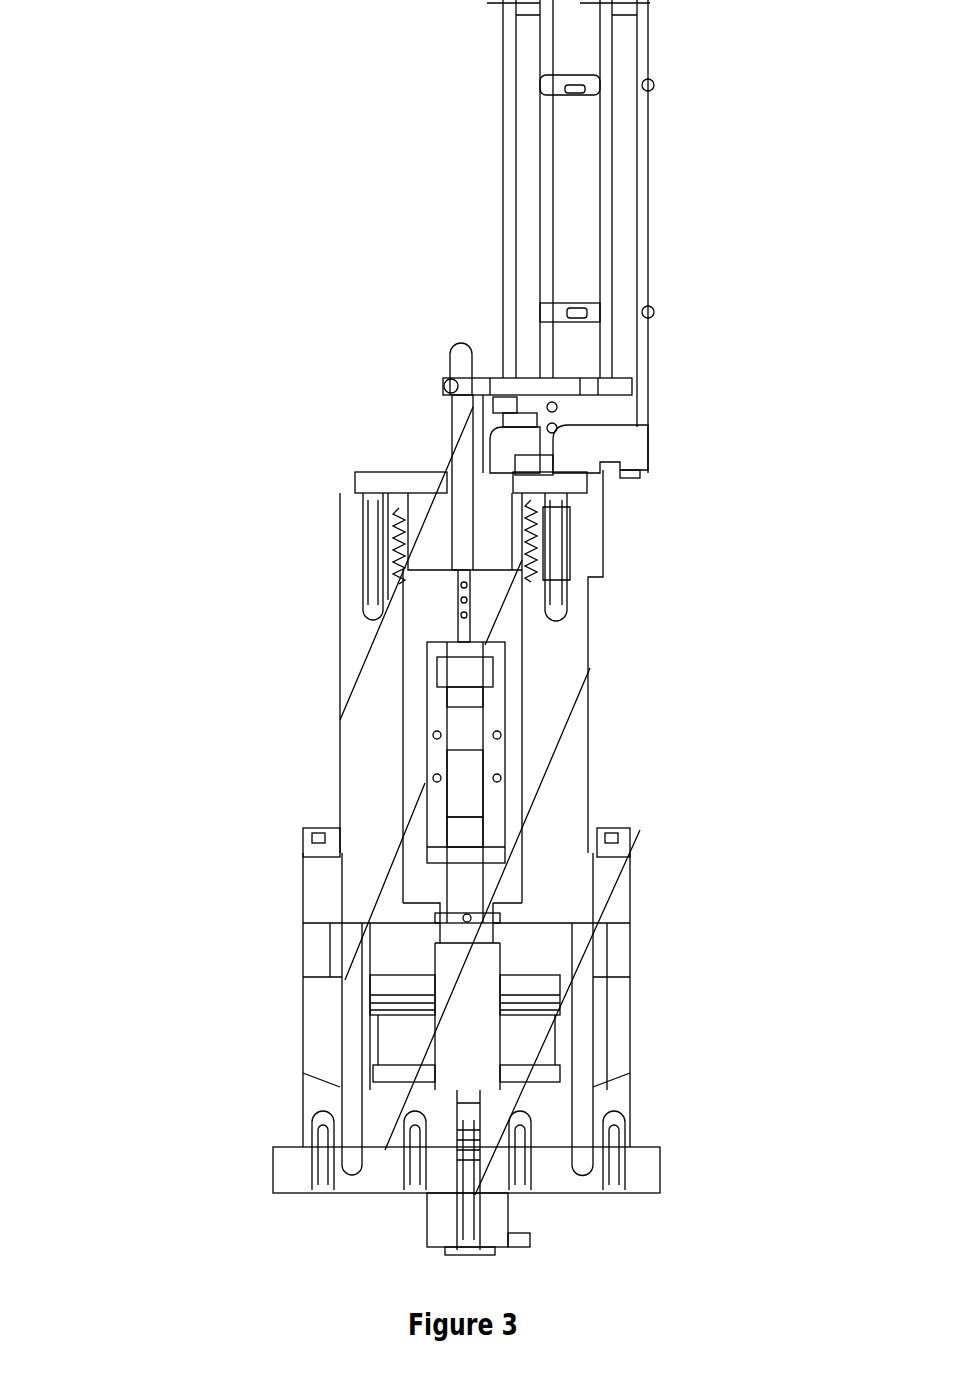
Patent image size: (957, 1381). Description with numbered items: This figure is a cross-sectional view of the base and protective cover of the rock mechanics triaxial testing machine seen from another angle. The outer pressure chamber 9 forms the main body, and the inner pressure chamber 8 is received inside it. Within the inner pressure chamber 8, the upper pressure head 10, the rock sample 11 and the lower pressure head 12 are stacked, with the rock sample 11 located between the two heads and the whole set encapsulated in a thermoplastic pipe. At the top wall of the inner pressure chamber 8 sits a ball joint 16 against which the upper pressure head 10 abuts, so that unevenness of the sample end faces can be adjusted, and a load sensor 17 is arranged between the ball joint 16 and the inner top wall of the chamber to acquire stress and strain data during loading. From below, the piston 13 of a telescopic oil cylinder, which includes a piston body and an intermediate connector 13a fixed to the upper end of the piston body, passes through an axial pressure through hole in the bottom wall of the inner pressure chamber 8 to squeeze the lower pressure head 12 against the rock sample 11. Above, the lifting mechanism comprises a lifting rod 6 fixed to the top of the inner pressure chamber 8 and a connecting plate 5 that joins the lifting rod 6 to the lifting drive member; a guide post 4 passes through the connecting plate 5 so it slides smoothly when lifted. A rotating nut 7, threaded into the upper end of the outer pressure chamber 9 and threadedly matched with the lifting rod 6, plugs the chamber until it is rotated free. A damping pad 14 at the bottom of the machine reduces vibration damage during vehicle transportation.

The guide post 4 is at (475, 248).
The connecting plate 5 is at (417, 373).
The lifting rod 6 is at (440, 445).
The rotating nut 7 is at (390, 516).
The inner pressure chamber 8 is at (410, 607).
The outer pressure chamber 9 is at (350, 745).
The upper pressure head 10 is at (505, 727).
The rock sample 11 is at (495, 794).
The lower pressure head 12 is at (496, 831).
The piston 13 is at (515, 1033).
The intermediate connector 13a is at (496, 918).
The damping pad 14 is at (664, 1153).
The ball joint 16 is at (496, 687).
The load sensor 17 is at (506, 647).